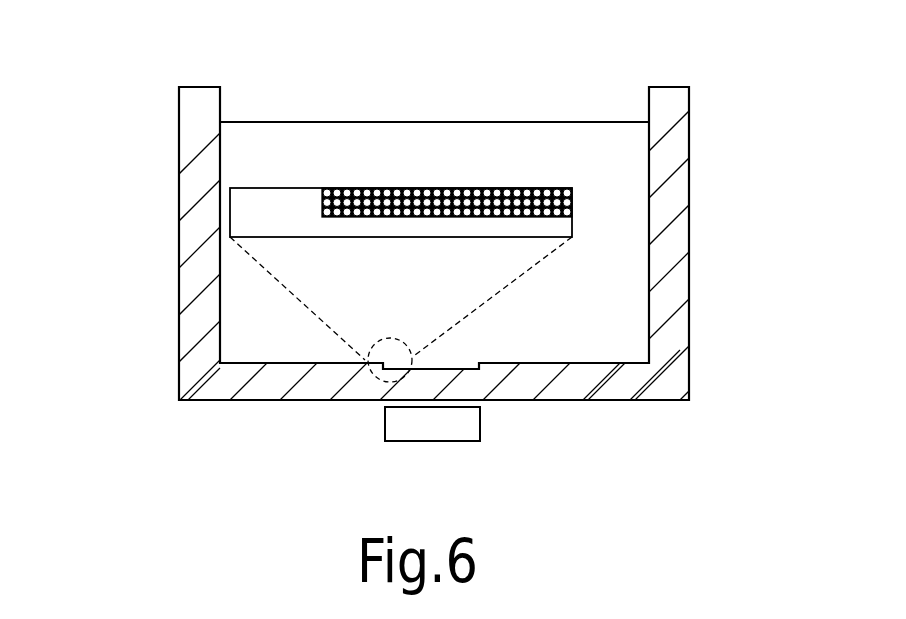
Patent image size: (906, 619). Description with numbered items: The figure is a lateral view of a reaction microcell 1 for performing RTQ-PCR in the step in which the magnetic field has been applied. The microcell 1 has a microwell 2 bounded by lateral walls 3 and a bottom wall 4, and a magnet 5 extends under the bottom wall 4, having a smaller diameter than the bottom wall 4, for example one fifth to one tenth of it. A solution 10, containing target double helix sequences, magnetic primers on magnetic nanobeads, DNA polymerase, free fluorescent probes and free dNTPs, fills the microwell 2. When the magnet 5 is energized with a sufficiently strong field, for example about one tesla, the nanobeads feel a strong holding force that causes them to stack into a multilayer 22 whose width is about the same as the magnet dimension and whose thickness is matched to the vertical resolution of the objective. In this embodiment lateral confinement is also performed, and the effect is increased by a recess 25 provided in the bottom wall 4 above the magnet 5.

The reaction microcell 1 is at (136, 118).
The microwell 2 is at (704, 151).
The lateral walls 3 is at (179, 295).
The bottom wall 4 is at (218, 390).
The magnet 5 is at (480, 428).
The solution 10 is at (483, 140).
The multilayer 22 is at (458, 185).
The recess 25 is at (326, 187).